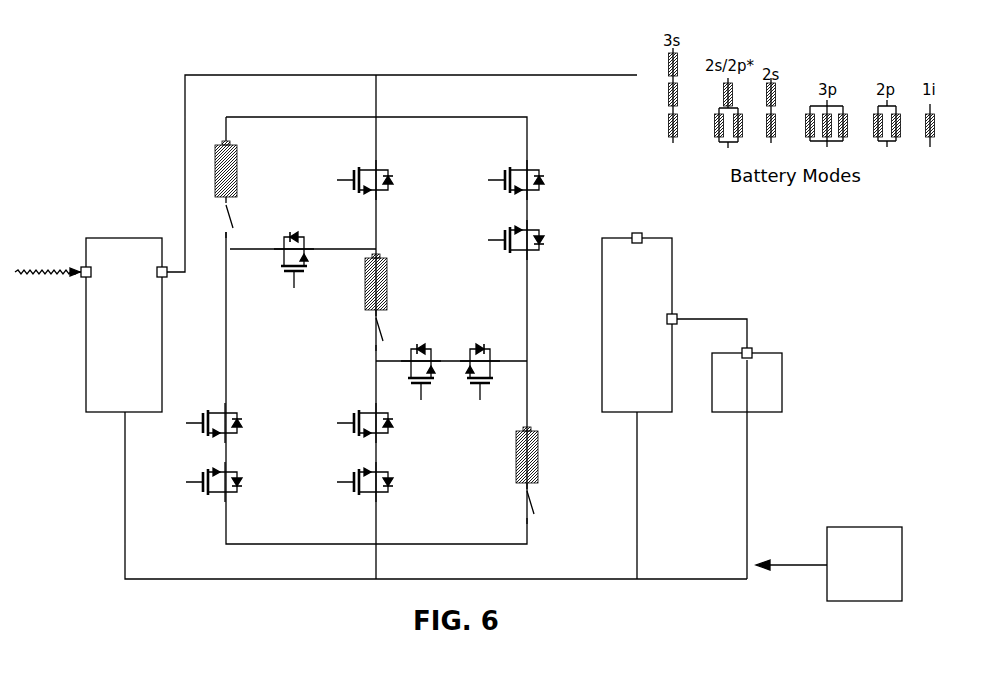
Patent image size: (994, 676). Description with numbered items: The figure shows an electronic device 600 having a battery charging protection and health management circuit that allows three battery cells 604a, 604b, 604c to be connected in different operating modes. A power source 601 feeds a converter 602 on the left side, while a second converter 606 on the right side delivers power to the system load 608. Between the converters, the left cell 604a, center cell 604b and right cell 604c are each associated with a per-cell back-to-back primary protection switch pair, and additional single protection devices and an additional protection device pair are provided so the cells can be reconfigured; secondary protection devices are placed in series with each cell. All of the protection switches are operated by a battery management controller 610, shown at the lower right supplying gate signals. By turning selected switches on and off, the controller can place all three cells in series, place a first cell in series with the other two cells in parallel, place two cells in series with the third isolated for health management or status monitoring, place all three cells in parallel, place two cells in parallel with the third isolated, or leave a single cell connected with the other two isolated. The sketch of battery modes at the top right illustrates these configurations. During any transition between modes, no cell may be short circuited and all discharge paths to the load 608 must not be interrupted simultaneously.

The electronic device 600 is at (138, 66).
The power source 601 is at (48, 260).
The converter 602 is at (128, 238).
The battery cell 604a is at (238, 160).
The battery cell 604b is at (388, 282).
The battery cell 604c is at (538, 456).
The converter 606 is at (668, 238).
The load 608 is at (776, 352).
The battery management controller 610 is at (858, 526).